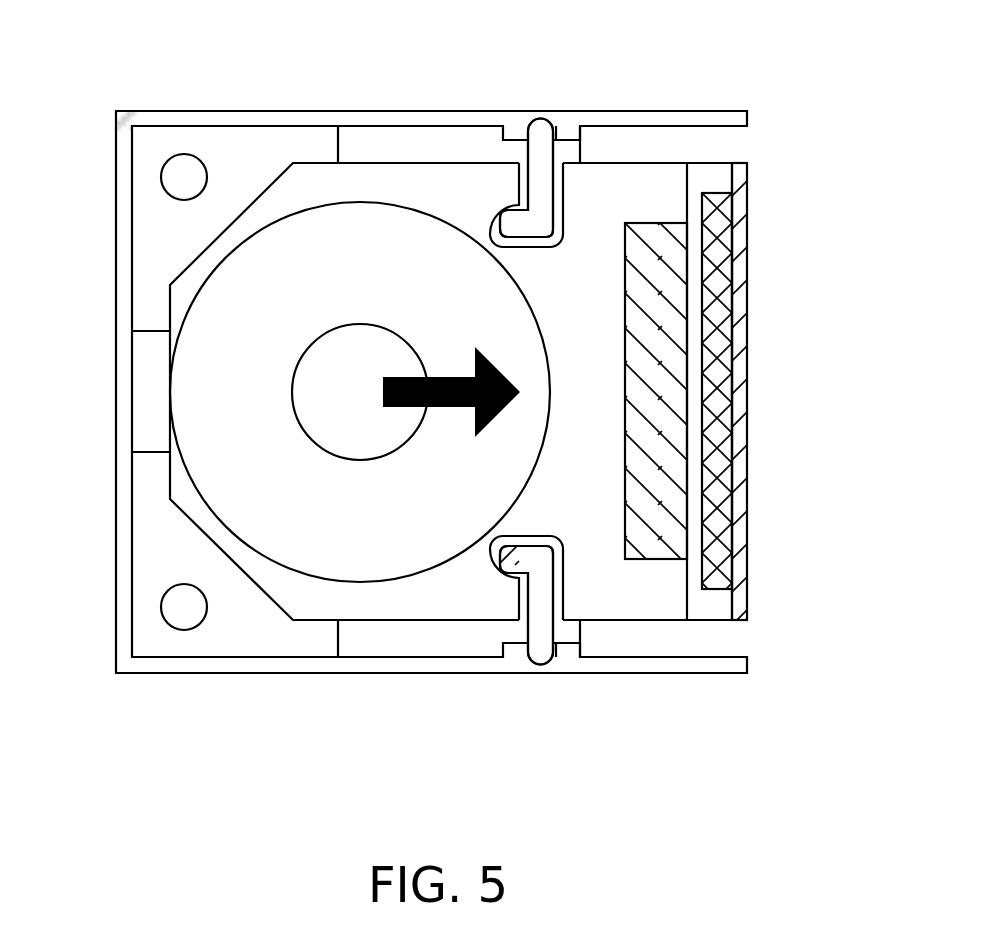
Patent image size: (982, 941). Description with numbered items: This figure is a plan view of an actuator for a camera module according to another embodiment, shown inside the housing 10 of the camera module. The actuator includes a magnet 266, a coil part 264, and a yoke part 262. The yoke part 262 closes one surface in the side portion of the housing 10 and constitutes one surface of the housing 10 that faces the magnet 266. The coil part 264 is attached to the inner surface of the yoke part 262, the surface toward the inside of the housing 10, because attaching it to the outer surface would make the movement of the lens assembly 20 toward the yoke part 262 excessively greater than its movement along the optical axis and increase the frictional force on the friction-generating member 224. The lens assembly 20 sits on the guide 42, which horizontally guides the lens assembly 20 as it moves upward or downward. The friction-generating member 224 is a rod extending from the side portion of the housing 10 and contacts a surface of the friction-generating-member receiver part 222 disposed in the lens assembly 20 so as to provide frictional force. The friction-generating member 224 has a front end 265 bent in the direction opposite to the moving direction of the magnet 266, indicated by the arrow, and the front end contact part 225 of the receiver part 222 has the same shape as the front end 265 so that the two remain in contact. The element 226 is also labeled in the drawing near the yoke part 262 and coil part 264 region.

The housing 10 is at (121, 393).
The lens assembly 20 is at (397, 610).
The guide 42 is at (228, 642).
The friction-generating-member receiver part 222 is at (550, 170).
The friction-generating member 224 is at (543, 657).
The front end contact part 225 is at (512, 213).
The support frame 226 is at (657, 175).
The yoke part 262 is at (740, 440).
The coil part 264 is at (725, 360).
The front end 265 is at (510, 560).
The magnet 266 is at (682, 292).